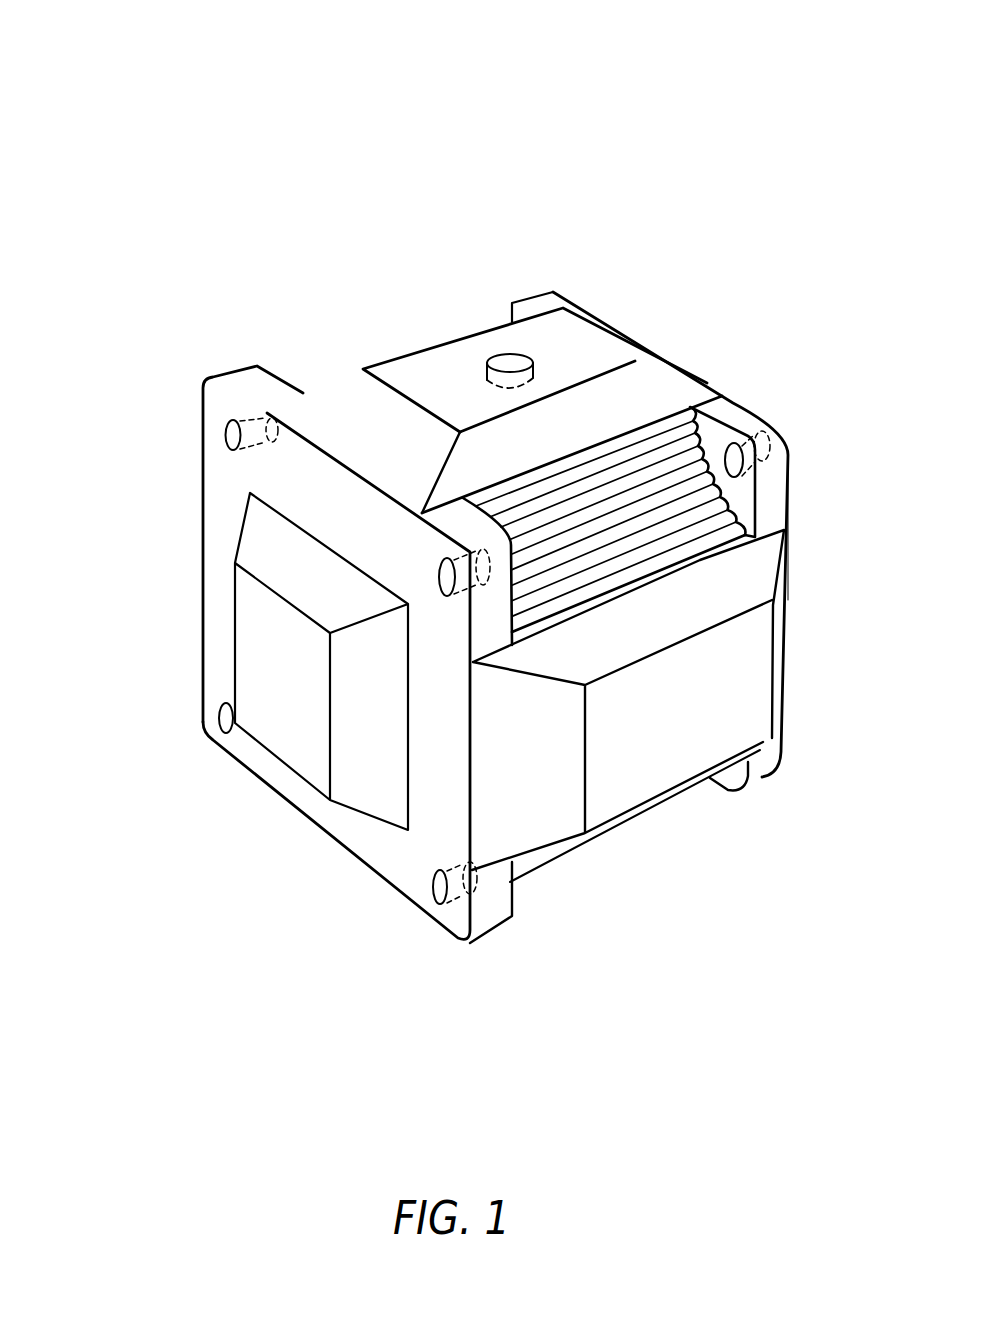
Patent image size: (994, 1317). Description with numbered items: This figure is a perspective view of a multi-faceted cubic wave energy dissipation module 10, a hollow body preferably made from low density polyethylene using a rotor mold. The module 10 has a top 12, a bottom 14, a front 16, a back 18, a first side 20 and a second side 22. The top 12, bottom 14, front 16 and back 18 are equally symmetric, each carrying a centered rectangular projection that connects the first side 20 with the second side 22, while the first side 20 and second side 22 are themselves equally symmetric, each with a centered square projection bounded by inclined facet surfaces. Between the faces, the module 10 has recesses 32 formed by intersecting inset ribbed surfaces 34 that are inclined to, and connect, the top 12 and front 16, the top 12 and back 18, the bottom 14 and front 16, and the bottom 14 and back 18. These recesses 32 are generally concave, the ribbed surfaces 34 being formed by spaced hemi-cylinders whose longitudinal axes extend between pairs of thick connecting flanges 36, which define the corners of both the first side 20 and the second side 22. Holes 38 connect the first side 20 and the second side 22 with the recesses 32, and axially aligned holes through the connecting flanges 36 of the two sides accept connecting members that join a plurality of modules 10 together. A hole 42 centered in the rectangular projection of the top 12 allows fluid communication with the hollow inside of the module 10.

The multi-faceted cubic wave energy dissipation module 10 is at (249, 94).
The top 12 is at (458, 237).
The bottom 14 is at (541, 912).
The front 16 is at (702, 736).
The back 18 is at (176, 362).
The first side 20 is at (193, 661).
The second side 22 is at (800, 553).
The recesses 32 is at (658, 476).
The inset ribbed surfaces 34 is at (580, 495).
The thick connecting flanges 36 is at (764, 488).
The holes 38 is at (742, 455).
The hole 42 is at (490, 357).